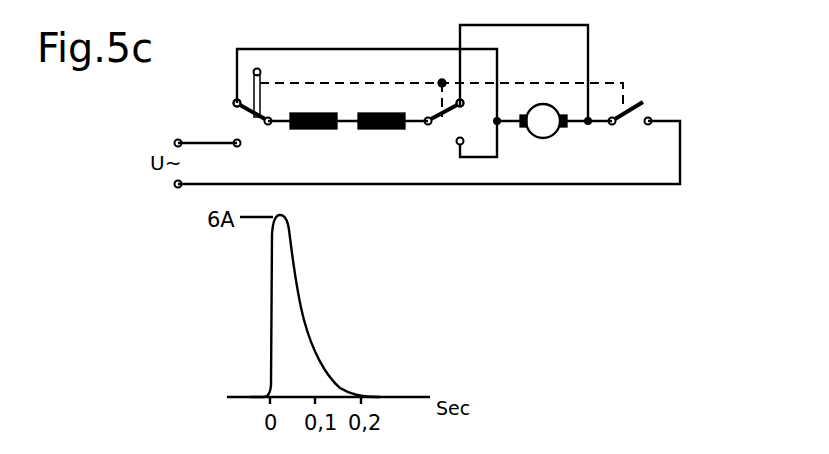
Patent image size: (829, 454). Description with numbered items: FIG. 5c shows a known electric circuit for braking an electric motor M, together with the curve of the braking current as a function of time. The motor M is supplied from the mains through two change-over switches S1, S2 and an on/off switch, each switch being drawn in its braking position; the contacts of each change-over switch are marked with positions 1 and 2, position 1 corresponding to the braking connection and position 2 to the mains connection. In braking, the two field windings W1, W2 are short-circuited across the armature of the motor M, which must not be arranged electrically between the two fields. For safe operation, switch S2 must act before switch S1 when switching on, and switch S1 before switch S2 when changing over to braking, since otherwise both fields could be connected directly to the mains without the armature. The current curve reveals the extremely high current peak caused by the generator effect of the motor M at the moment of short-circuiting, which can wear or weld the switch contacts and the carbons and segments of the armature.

The switch contact position 1 is at (349, 100).
The switch contact position 2 is at (351, 151).
The switch S1 is at (256, 117).
The switch S2 is at (438, 130).
The winding W1 is at (313, 108).
The winding W2 is at (381, 108).
The motor M is at (543, 121).